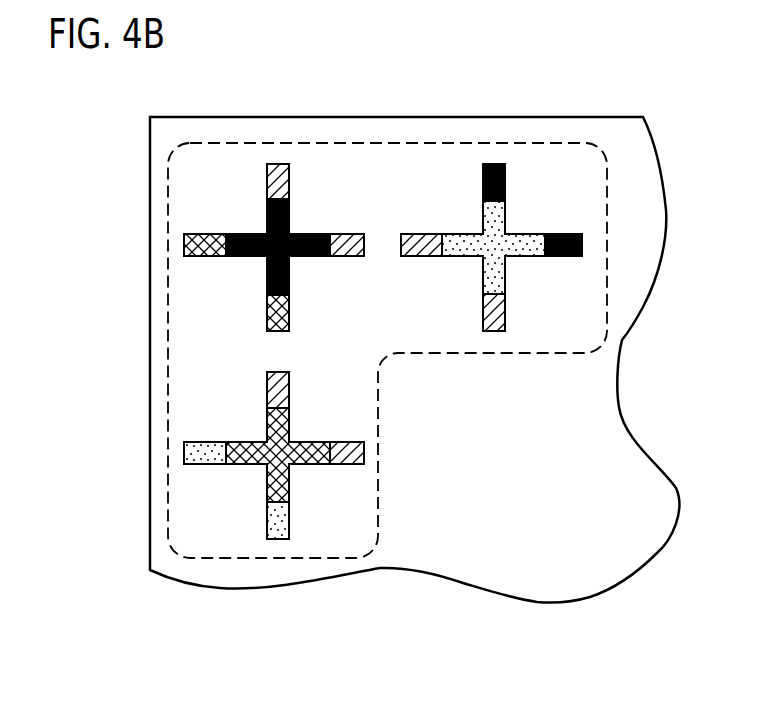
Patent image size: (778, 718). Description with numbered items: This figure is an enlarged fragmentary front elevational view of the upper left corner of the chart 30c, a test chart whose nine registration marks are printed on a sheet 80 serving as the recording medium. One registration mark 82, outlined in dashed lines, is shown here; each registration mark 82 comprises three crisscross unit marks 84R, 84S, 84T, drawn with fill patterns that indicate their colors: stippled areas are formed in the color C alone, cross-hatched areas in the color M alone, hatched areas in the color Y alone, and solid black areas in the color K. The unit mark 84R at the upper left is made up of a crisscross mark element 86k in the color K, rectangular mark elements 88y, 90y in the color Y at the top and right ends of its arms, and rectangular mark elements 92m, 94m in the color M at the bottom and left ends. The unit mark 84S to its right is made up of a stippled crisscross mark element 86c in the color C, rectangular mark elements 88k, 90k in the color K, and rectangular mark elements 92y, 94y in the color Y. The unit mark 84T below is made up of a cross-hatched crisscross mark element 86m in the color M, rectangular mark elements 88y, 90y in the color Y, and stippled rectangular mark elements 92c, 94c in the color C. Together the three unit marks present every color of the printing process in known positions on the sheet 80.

The chart 30c is at (387, 86).
The sheet 80 is at (507, 125).
The registration mark 82 is at (520, 355).
The unit mark 84R is at (240, 305).
The unit mark 84S is at (456, 303).
The unit mark 84T is at (241, 505).
The rectangular mark element 88y is at (270, 178).
The crisscross mark element 86k is at (289, 219).
The rectangular mark element 94m is at (204, 240).
The rectangular mark element 90y is at (342, 238).
The rectangular mark element 92m is at (287, 310).
The rectangular mark element 88k is at (484, 178).
The crisscross mark element 86c is at (498, 219).
The rectangular mark element 94y is at (421, 246).
The rectangular mark element 90k is at (562, 236).
The rectangular mark element 92y is at (496, 312).
The crisscross mark element 86m is at (289, 427).
The rectangular mark element 94c is at (204, 448).
The rectangular mark element 92c is at (287, 519).